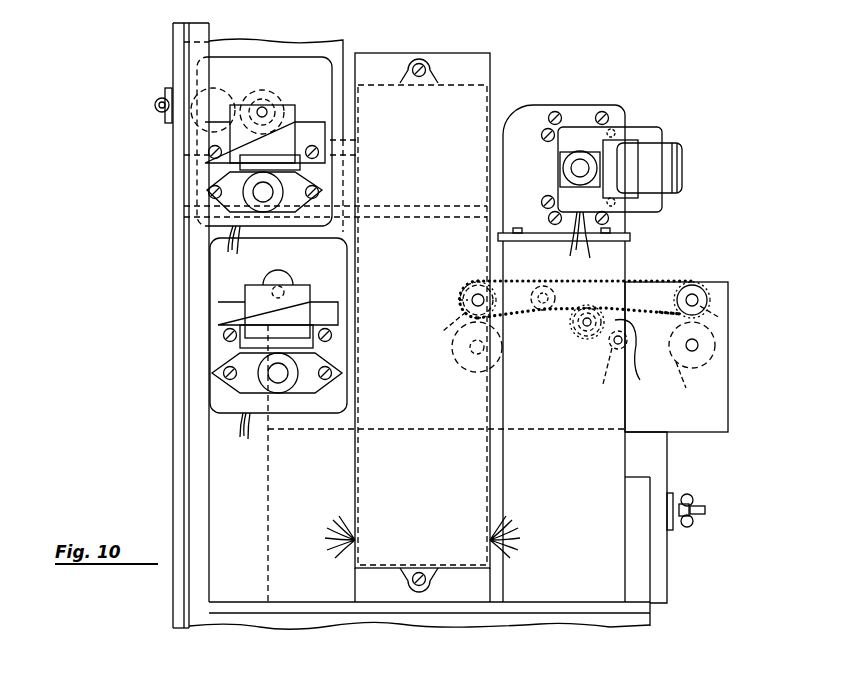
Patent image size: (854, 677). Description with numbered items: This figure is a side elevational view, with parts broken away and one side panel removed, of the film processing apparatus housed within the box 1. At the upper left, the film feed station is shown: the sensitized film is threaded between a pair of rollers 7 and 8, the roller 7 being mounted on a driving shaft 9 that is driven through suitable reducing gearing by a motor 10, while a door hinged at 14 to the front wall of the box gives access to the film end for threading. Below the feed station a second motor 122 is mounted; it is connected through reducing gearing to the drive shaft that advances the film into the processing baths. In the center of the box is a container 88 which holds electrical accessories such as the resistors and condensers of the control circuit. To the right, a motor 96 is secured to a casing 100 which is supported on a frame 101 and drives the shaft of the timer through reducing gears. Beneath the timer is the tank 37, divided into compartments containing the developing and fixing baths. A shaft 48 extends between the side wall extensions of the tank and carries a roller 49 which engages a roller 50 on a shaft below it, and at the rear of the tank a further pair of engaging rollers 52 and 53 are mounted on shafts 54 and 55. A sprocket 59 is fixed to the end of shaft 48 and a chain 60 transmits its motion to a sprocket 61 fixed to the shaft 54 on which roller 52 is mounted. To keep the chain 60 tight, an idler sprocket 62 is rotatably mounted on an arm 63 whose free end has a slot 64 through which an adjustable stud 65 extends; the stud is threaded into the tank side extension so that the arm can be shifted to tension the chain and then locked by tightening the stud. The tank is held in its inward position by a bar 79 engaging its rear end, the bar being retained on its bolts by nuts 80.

The box 1 is at (172, 228).
The roller 7 is at (290, 98).
The roller 8 is at (218, 92).
The driving shaft 9 is at (272, 95).
The motor 10 is at (286, 132).
The hinge 14 is at (155, 105).
The tank 37 is at (732, 412).
The shaft 48 is at (477, 295).
The roller 49 is at (460, 301).
The roller 50 is at (466, 366).
The roller 52 is at (722, 319).
The roller 53 is at (693, 383).
The shaft 54 is at (700, 300).
The shaft 55 is at (698, 347).
The sprocket 59 is at (452, 322).
The chain 60 is at (700, 279).
The sprocket 61 is at (675, 305).
The idler sprocket 62 is at (578, 340).
The arm 63 is at (552, 313).
The slot 64 is at (606, 372).
The adjustable stud 65 is at (636, 356).
The bar 79 is at (680, 530).
The nut 80 is at (693, 497).
The container 88 is at (477, 97).
The motor 96 is at (668, 148).
The casing 100 is at (566, 105).
The frame 101 is at (632, 266).
The motor 122 is at (333, 272).